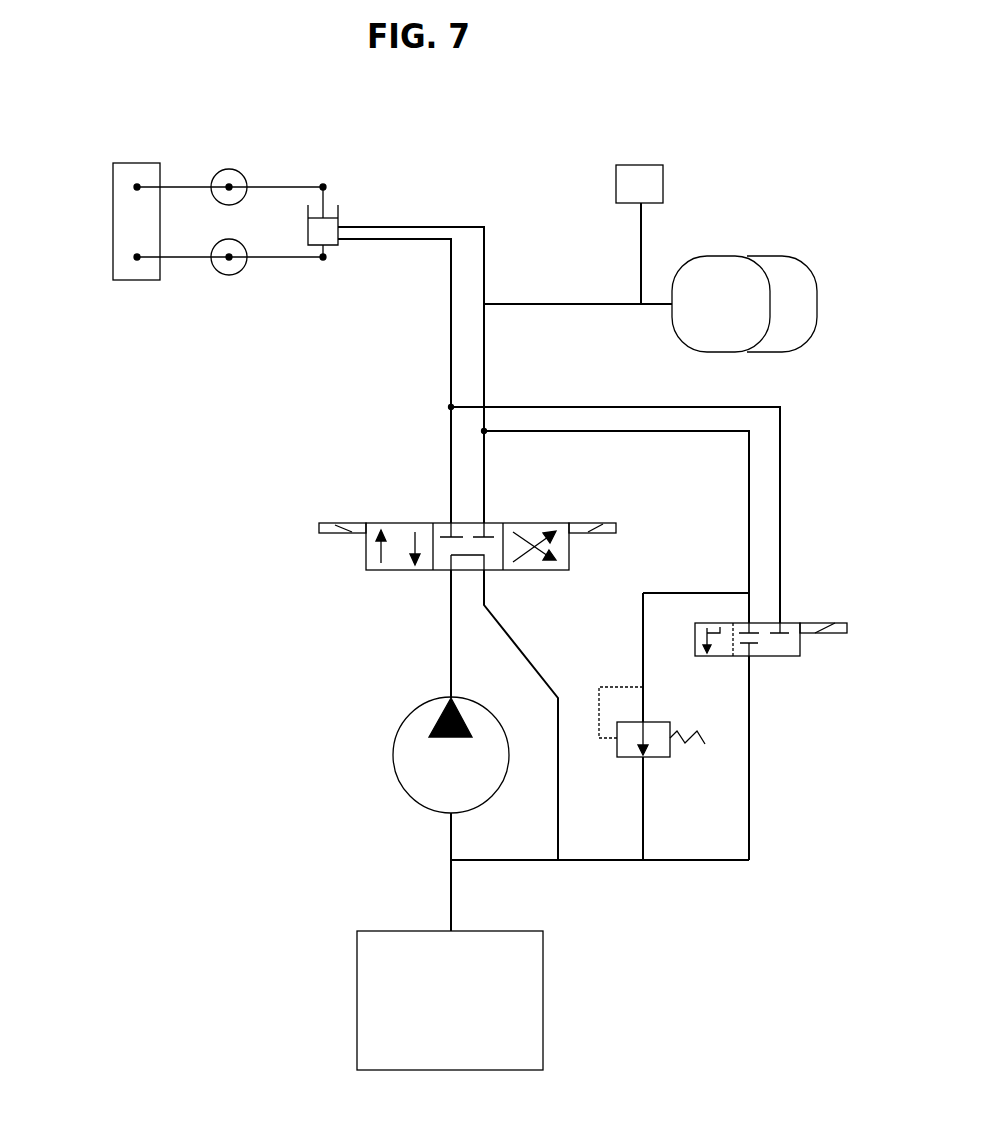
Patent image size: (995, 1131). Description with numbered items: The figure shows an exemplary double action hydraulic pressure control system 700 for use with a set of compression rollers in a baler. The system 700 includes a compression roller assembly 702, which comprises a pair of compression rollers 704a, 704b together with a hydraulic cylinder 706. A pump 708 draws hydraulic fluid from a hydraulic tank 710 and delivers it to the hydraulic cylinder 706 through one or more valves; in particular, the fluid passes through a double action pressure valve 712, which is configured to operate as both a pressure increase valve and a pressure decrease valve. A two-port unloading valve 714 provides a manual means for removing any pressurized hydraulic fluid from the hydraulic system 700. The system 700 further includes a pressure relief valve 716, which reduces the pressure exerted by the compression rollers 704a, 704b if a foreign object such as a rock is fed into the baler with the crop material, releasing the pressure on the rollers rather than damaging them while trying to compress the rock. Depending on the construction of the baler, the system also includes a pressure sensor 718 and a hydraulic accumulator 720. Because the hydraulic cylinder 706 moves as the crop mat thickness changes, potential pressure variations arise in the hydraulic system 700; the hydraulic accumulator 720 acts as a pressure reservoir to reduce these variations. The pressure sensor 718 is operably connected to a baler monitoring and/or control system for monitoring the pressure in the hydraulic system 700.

The double action hydraulic pressure control system 700 is at (127, 47).
The compression roller assembly 702 is at (75, 176).
The compression roller 704a is at (238, 162).
The compression roller 704b is at (240, 282).
The hydraulic cylinder 706 is at (342, 222).
The pump 708 is at (488, 704).
The hydraulic tank 710 is at (502, 920).
The double action pressure valve 712 is at (533, 505).
The two-port unloading valve 714 is at (817, 617).
The pressure relief valve 716 is at (661, 713).
The pressure sensor 718 is at (667, 184).
The hydraulic accumulator 720 is at (785, 352).